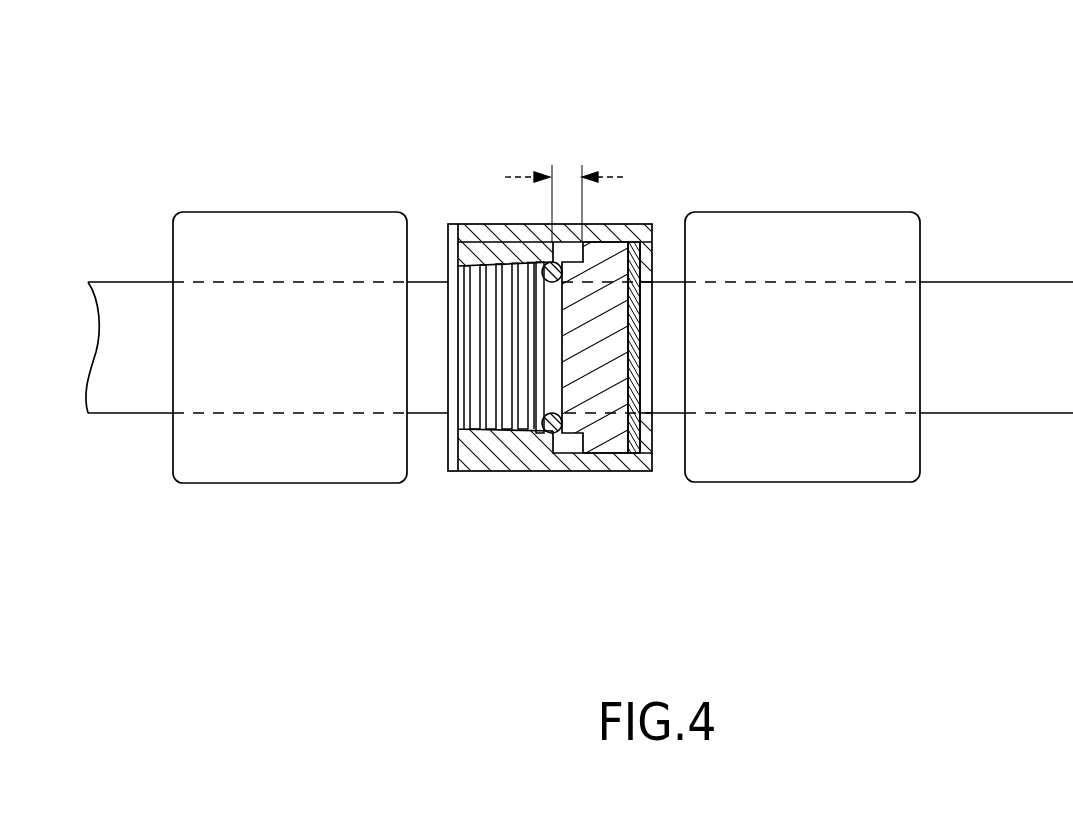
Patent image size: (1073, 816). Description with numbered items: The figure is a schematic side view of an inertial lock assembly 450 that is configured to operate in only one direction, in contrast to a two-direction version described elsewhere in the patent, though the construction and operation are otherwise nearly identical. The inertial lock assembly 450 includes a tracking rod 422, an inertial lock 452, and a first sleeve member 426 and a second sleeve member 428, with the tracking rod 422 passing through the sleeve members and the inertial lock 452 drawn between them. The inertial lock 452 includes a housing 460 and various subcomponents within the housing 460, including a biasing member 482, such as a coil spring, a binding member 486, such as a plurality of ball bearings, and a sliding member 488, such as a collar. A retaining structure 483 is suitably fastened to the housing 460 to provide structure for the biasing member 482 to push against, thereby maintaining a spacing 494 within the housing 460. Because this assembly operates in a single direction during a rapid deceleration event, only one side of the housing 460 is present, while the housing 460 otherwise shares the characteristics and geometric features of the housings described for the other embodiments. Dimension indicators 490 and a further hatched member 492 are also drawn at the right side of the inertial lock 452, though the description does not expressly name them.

The tracking rod 422 is at (118, 402).
The first sleeve member 426 is at (262, 212).
The second sleeve member 428 is at (835, 212).
The inertial lock assembly 450 is at (207, 140).
The inertial lock 452 is at (465, 177).
The housing 460 is at (604, 225).
The biasing member 482 is at (500, 278).
The retaining structure 483 is at (450, 247).
The binding member 486 is at (547, 436).
The sliding member 488 is at (612, 434).
The gap width 490 is at (635, 245).
The seal 492 is at (648, 248).
The spacing 494 is at (528, 175).